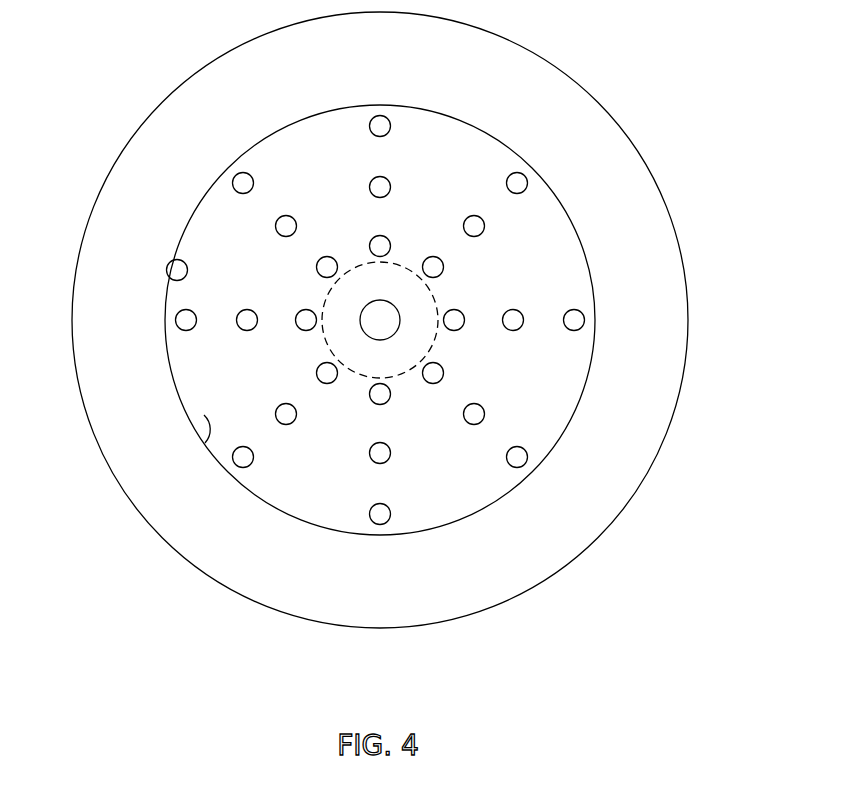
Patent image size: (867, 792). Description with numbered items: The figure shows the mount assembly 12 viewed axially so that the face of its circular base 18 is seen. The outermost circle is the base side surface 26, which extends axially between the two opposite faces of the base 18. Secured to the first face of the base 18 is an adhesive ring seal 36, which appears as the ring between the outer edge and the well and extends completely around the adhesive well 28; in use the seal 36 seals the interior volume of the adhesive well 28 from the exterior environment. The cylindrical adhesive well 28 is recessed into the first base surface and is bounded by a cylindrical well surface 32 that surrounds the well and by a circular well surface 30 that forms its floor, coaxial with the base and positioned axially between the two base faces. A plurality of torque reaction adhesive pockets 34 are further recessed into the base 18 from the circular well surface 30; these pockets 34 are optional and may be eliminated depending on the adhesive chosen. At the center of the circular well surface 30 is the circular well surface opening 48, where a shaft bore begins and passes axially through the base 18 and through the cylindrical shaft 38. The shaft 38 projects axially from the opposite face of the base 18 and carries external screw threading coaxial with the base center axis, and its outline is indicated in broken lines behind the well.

The mount assembly 12 is at (707, 250).
The circular base 18 is at (127, 142).
The base side surface 26 is at (93, 200).
The cylindrical adhesive well 28 is at (187, 363).
The circular well surface 30 is at (205, 443).
The cylindrical well surface 32 is at (173, 263).
The torque reaction adhesive pockets 34 is at (367, 180).
The adhesive ring seal 36 is at (645, 193).
The cylindrical shaft 38 is at (435, 348).
The circular well surface opening 48 is at (390, 342).